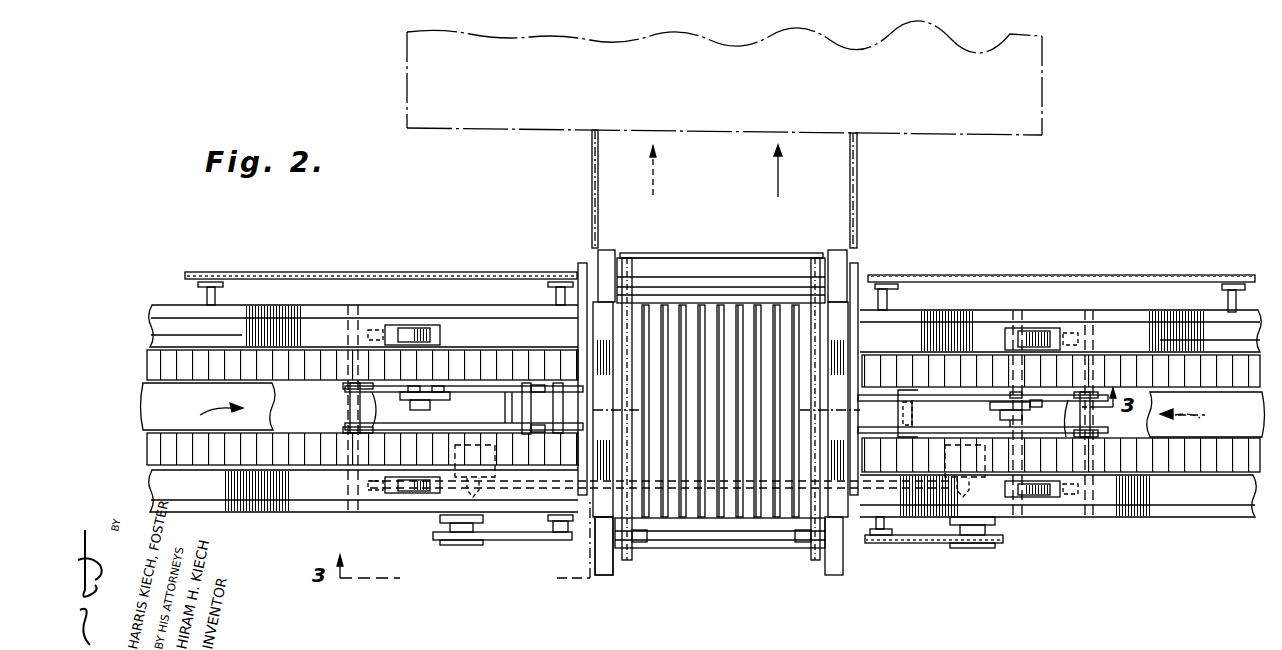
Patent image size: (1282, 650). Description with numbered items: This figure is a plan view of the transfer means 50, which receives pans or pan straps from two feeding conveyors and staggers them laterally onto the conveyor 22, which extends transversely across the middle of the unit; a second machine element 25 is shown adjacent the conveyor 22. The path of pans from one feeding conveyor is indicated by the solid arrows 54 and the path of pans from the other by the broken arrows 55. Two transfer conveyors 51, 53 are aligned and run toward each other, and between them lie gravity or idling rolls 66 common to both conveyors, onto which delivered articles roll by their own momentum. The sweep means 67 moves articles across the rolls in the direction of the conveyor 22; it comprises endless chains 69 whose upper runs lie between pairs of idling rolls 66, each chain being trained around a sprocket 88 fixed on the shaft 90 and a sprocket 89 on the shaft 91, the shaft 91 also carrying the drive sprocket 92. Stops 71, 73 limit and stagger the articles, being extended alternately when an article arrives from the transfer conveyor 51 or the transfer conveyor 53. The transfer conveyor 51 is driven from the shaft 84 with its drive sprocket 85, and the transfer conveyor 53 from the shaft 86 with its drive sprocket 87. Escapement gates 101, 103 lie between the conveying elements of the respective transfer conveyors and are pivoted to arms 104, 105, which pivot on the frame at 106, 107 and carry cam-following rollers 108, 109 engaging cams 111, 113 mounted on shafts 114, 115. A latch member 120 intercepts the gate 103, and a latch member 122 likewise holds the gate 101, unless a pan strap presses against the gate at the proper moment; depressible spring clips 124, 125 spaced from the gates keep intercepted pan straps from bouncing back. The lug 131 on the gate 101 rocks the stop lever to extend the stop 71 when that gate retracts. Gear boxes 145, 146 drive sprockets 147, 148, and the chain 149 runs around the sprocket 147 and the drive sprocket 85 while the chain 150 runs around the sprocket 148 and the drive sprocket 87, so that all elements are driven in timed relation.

The conveyor 22 is at (583, 176).
The press station 25 is at (848, 195).
The transfer means 50 is at (770, 430).
The transfer conveyor 51 is at (303, 472).
The transfer conveyor 53 is at (1143, 475).
The solid arrows 54 is at (792, 179).
The broken arrows 55 is at (656, 193).
The idling rolls 66 is at (708, 517).
The sweep means 67 is at (805, 562).
The endless chains 69 is at (826, 560).
The stop 71 is at (858, 330).
The stop 73 is at (575, 325).
The shaft 84 is at (568, 535).
The drive sprocket 85 is at (552, 537).
The shaft 86 is at (866, 540).
The drive sprocket 87 is at (890, 538).
The sprocket 88 is at (800, 545).
The sprocket 89 is at (815, 262).
The shaft 90 is at (730, 543).
The shaft 91 is at (710, 278).
The drive sprocket 92 is at (592, 262).
The gate 101 is at (520, 410).
The gate 103 is at (905, 390).
The arm 104 is at (372, 430).
The arm 105 is at (1066, 434).
The pivotal connection 106 is at (348, 408).
The pivotal connection 107 is at (1095, 397).
The cam-following roller 108 is at (410, 385).
The cam-following roller 109 is at (1036, 400).
The cam 111 is at (443, 385).
The cam 113 is at (1000, 402).
The shaft 114 is at (430, 410).
The shaft 115 is at (1000, 418).
The latch member 120 is at (935, 433).
The latch member 122 is at (510, 390).
The spring clip 124 is at (407, 493).
The spring clip 125 is at (1042, 497).
The lug 131 is at (535, 433).
The gear box 145 is at (500, 500).
The gear box 146 is at (940, 500).
The sprocket 147 is at (448, 546).
The sprocket 148 is at (986, 549).
The chain 149 is at (490, 541).
The chain 150 is at (946, 545).